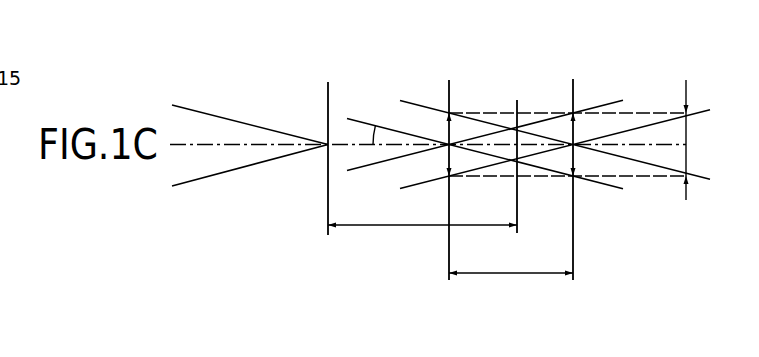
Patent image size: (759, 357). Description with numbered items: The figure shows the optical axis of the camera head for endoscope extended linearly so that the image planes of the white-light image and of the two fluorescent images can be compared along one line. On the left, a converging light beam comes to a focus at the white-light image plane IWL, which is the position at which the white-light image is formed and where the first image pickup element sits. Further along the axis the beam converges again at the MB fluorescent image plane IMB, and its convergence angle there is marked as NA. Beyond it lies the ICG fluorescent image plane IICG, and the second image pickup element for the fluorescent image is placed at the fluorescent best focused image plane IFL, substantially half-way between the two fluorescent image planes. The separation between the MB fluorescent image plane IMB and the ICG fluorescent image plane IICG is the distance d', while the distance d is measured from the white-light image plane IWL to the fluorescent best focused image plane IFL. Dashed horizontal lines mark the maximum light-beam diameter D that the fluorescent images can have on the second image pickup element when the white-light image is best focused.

The white-light image plane IWL is at (328, 107).
The numerical aperture NA is at (373, 140).
The MB fluorescent image plane IMB is at (449, 88).
The fluorescent best focused image plane IFL is at (517, 102).
The ICG fluorescent image plane IICG is at (573, 87).
The maximum light-beam diameter D is at (699, 140).
The distance between white-light image plane and fluorescent best focused image plan d is at (422, 213).
The distance between MB fluorescent image plane and ICG fluorescent image plane d' is at (511, 260).